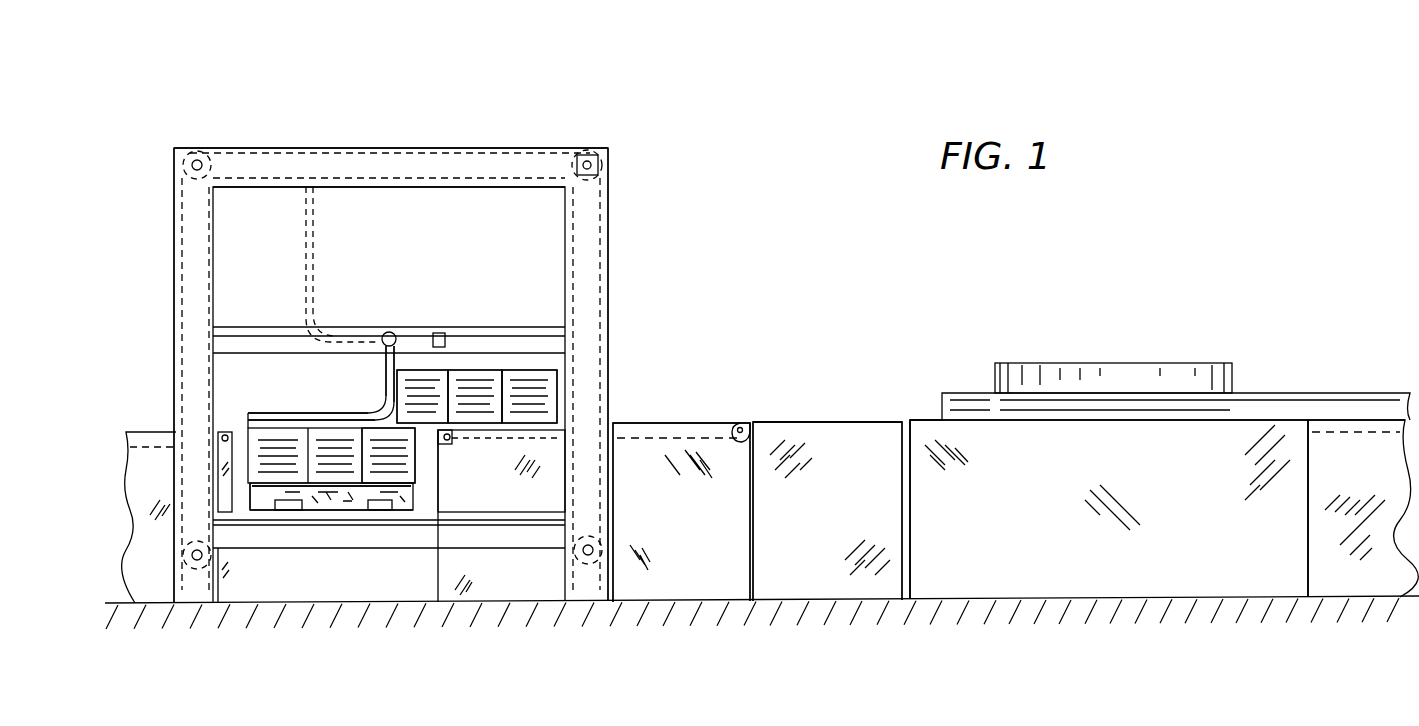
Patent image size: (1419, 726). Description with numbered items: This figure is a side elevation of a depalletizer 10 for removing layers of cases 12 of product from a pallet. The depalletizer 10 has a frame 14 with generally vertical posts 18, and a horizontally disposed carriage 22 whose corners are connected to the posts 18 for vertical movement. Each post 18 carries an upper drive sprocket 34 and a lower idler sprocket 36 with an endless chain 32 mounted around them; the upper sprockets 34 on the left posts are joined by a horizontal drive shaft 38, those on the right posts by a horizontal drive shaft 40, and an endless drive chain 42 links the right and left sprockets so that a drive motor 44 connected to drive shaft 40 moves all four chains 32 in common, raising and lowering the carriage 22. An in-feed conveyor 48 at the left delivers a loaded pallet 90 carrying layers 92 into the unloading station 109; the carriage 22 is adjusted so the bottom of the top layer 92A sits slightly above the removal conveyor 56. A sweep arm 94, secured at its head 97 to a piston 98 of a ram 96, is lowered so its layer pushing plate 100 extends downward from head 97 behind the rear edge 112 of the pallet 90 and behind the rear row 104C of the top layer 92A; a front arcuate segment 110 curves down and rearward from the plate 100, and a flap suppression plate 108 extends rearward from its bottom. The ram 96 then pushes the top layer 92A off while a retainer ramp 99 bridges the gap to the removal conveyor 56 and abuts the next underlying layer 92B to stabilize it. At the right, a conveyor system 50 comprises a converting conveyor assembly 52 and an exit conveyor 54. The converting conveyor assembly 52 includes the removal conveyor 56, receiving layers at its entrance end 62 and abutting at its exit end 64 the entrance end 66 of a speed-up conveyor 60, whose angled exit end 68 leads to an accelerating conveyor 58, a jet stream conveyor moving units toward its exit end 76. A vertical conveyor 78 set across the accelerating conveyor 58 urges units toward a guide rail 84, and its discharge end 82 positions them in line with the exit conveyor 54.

The depalletizer 10 is at (607, 110).
The cases of product 12 is at (250, 438).
The frame 14 is at (611, 261).
The vertical posts 18 is at (176, 230).
The carriage 22 is at (527, 549).
The endless chain 32 is at (213, 222).
The upper drive sprocket 34 is at (183, 150).
The lower idler sprocket 36 is at (195, 570).
The horizontal drive shaft 38 is at (203, 160).
The horizontal drive shaft 40 is at (580, 160).
The endless drive chain 42 is at (392, 148).
The drive motor 44 is at (585, 155).
The in-feed conveyor 48 is at (152, 432).
The conveyor system 50 is at (838, 384).
The converting conveyor assembly 52 is at (816, 421).
The exit conveyor 54 is at (1370, 420).
The removal conveyor 56 is at (630, 423).
The accelerating conveyor 58 is at (930, 420).
The speed-up conveyor 60 is at (862, 422).
The entrance end 62 is at (430, 470).
The exit end 64 is at (745, 423).
The entrance end 66 is at (738, 430).
The exit end 68 is at (912, 540).
The exit end 76 is at (1310, 440).
The vertical conveyor 78 is at (1068, 363).
The discharge end 82 is at (1245, 393).
The guide rail 84 is at (1133, 363).
The loaded pallet 90 is at (326, 492).
The layers 92 is at (250, 473).
The top layer 92A is at (534, 370).
The next underlying layer 92B is at (415, 485).
The sweep arm 94 is at (418, 370).
The ram 96 is at (530, 370).
The head 97 is at (385, 330).
The piston 98 is at (420, 370).
The retainer ramp 99 is at (450, 440).
The layer pushing plate 100 is at (386, 392).
The rear row 104C is at (462, 345).
The flap suppression plate 108 is at (264, 419).
The unloading station 109 is at (262, 500).
The front arcuate segment 110 is at (372, 418).
The rear edge 112 is at (238, 480).